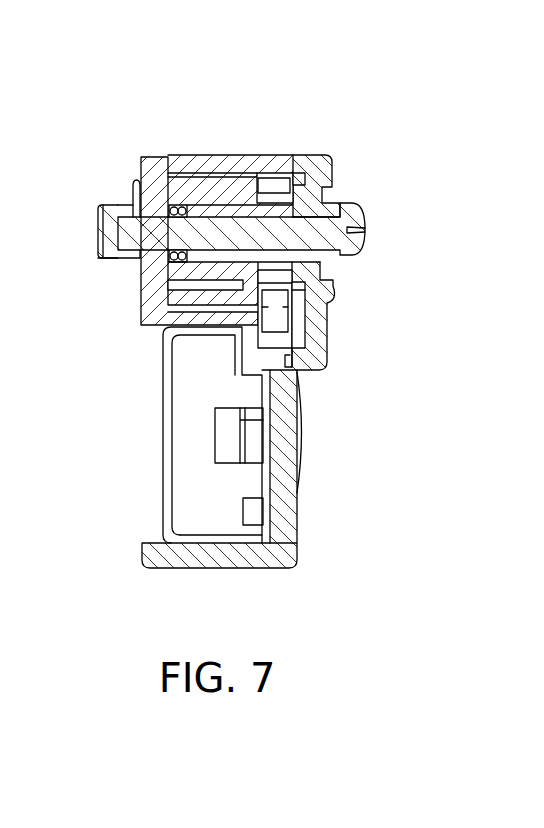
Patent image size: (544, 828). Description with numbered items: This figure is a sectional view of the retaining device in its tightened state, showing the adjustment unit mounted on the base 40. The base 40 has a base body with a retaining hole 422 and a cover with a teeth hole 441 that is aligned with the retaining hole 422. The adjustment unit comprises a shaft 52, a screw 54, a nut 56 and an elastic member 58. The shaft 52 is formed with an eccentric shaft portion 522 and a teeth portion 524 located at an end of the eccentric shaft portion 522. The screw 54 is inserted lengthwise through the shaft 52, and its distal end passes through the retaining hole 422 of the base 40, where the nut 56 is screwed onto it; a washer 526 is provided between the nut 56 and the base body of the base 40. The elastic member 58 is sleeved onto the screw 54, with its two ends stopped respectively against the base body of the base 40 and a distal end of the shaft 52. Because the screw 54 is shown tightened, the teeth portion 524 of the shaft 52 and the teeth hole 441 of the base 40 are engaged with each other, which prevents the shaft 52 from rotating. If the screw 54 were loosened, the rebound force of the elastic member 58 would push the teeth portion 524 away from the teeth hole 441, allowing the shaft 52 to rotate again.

The base 40 is at (312, 527).
The retaining hole 422 is at (152, 253).
The teeth hole 441 is at (333, 300).
The shaft 52 is at (236, 414).
The eccentric shaft portion 522 is at (243, 213).
The teeth portion 524 is at (235, 84).
The washer 526 is at (132, 188).
The screw 54 is at (208, 232).
The nut 56 is at (100, 210).
The elastic member 58 is at (180, 206).